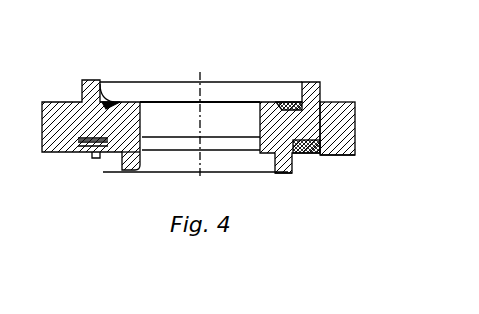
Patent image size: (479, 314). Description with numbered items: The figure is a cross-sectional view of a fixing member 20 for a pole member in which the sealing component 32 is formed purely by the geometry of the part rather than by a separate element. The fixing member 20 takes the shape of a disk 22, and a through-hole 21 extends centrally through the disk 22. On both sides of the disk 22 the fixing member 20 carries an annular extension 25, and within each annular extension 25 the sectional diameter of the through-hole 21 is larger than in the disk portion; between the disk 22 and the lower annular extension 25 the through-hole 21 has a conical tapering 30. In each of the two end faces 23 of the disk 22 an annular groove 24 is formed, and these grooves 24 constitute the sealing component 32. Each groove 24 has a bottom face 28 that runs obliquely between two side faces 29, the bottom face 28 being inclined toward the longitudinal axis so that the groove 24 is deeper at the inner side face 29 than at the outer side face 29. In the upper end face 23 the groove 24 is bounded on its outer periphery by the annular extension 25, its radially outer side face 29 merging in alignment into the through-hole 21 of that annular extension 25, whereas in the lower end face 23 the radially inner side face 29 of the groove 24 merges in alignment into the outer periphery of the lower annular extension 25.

The fixing member 20 is at (393, 91).
The through-hole 21 is at (253, 164).
The disk 22 is at (346, 137).
The end face 23 is at (337, 158).
The annular groove 24 is at (115, 106).
The annular extension 25 is at (54, 100).
The bottom face 28 is at (110, 98).
The side face 29 is at (293, 168).
The conical tapering 30 is at (137, 160).
The sealing component 32 is at (124, 127).